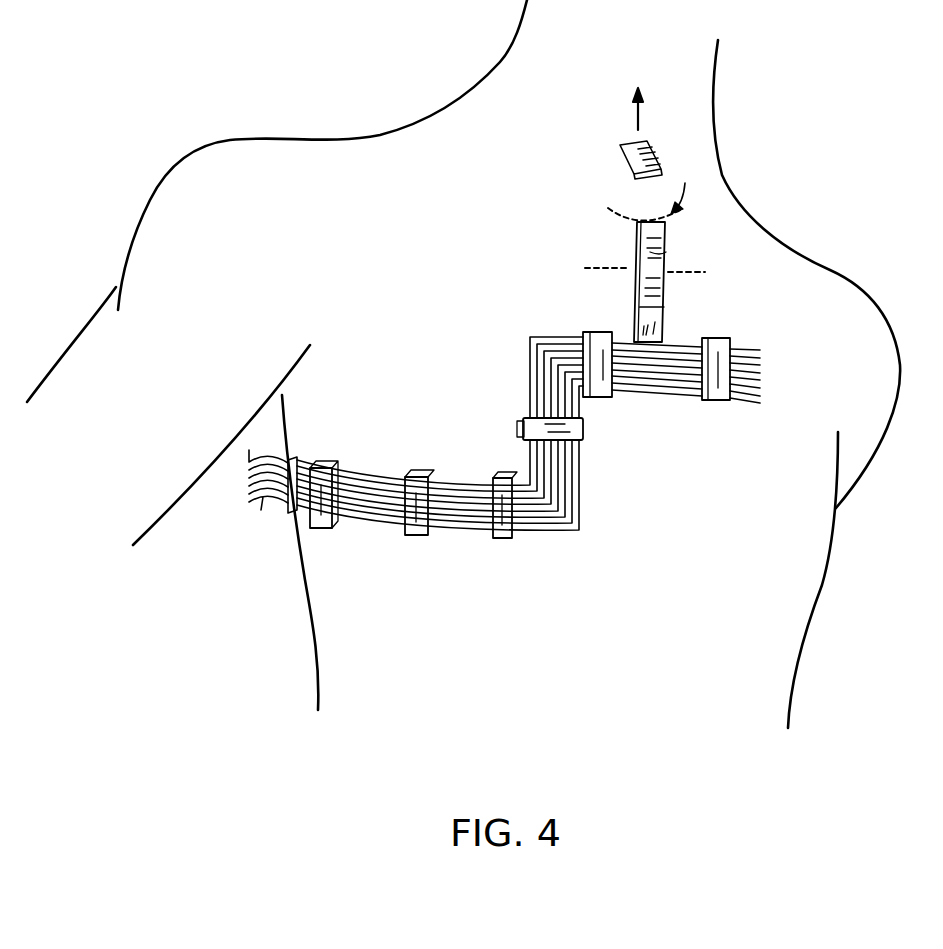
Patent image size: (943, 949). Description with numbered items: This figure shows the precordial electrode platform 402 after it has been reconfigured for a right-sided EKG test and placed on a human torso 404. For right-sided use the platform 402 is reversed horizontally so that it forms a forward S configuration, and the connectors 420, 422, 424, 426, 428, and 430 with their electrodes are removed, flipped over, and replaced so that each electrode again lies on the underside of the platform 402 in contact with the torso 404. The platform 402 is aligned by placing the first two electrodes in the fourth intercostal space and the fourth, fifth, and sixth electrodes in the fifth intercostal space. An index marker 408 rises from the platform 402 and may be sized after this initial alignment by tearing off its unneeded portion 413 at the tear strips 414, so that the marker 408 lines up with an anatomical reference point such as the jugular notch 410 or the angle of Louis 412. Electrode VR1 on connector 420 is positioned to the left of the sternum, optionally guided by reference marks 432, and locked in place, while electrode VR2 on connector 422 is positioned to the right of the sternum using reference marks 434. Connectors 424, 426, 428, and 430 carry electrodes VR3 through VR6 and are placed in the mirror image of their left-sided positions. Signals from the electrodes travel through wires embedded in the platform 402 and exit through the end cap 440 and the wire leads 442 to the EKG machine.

The platform 402 is at (572, 533).
The human torso 404 is at (393, 304).
The index marker 408 is at (657, 315).
The jugular notch 410 is at (670, 151).
The angle of Louis 412 is at (604, 268).
The unneeded portion 413 is at (620, 160).
The tear strips 414 is at (650, 247).
The connector 420 is at (718, 347).
The connector 422 is at (602, 390).
The connector 424 is at (517, 427).
The connector 426 is at (502, 538).
The connector 428 is at (419, 535).
The connector 430 is at (323, 529).
The reference marks 432 is at (752, 398).
The reference marks 434 is at (584, 334).
The end cap 440 is at (294, 459).
The wire leads 442 is at (259, 498).